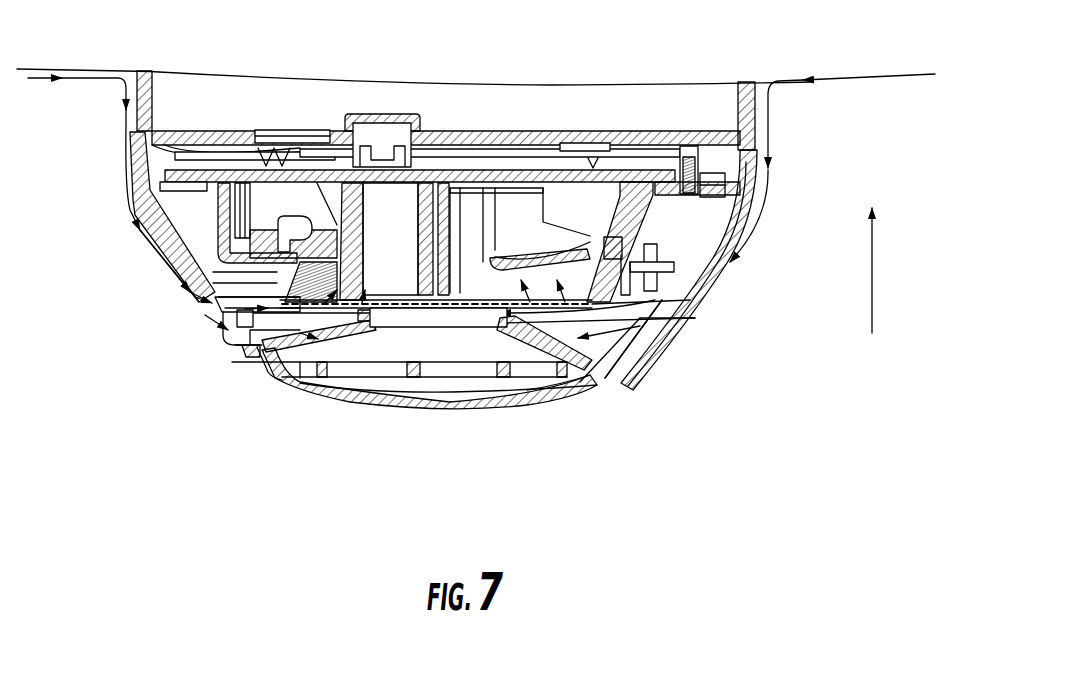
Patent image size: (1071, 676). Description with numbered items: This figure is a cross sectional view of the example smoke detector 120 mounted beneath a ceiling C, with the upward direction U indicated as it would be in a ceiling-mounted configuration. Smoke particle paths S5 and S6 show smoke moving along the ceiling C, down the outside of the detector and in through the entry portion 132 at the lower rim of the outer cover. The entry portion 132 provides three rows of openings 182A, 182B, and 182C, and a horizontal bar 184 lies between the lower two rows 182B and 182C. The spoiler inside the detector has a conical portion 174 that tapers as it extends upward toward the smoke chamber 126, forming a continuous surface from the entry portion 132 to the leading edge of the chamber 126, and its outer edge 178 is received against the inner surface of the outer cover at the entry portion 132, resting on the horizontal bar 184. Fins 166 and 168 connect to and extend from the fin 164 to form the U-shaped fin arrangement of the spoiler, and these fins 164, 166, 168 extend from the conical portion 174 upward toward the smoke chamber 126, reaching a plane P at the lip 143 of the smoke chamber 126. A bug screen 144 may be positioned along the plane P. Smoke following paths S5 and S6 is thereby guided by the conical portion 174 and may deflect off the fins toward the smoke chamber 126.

The smoke detector 120 is at (88, 208).
The smoke chamber 126 is at (397, 258).
The entry portion 132 is at (186, 372).
The lip 143 is at (658, 311).
The bug screen 144 is at (417, 304).
The fin 164 is at (438, 313).
The fin 166 is at (338, 332).
The fin 168 is at (528, 390).
The conical portion 174 is at (527, 302).
The outer edge 178 is at (258, 357).
The row of openings 182A is at (216, 312).
The row of openings 182B is at (227, 347).
The row of openings 182C is at (262, 378).
The horizontal bar 184 is at (247, 350).
The ceiling C is at (893, 76).
The plane P is at (658, 341).
The upward direction U is at (872, 280).
The smoke particle path S5 is at (77, 80).
The smoke particle path S6 is at (832, 168).